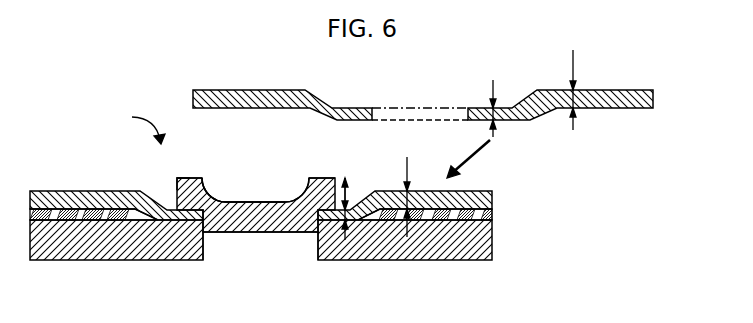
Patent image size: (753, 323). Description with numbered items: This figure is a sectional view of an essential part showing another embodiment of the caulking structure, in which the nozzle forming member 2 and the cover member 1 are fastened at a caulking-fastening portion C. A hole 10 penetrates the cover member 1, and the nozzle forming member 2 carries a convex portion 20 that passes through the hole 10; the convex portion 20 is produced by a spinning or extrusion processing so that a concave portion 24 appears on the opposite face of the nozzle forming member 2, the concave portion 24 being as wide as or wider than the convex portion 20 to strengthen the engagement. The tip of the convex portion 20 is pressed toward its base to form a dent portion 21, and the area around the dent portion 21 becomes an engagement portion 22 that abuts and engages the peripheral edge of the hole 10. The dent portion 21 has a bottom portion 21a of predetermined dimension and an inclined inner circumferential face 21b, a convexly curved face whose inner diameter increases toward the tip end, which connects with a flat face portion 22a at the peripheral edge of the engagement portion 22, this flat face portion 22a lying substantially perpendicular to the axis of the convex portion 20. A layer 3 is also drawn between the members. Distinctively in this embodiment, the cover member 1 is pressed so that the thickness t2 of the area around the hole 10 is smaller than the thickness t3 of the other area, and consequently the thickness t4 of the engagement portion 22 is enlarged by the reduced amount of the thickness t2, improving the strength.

The cover member 1 is at (473, 191).
The nozzle forming member 2 is at (437, 253).
The adhesive / intermediate layer 3 is at (492, 213).
The hole 10 is at (437, 112).
The convex portion 20 is at (272, 214).
The dent portion 21 is at (273, 188).
The bottom portion 21a is at (257, 201).
The inclined inner circumferential face 21b is at (220, 190).
The engagement portion 22 is at (317, 187).
The flat face portion 22a is at (180, 178).
The concave portion 24 is at (238, 248).
The caulking-fastening portion C is at (141, 124).
The thickness of the area around the hole t2 is at (362, 270).
The thickness of the other area t3 is at (501, 143).
The thickness of the engagement portion t4 is at (348, 195).